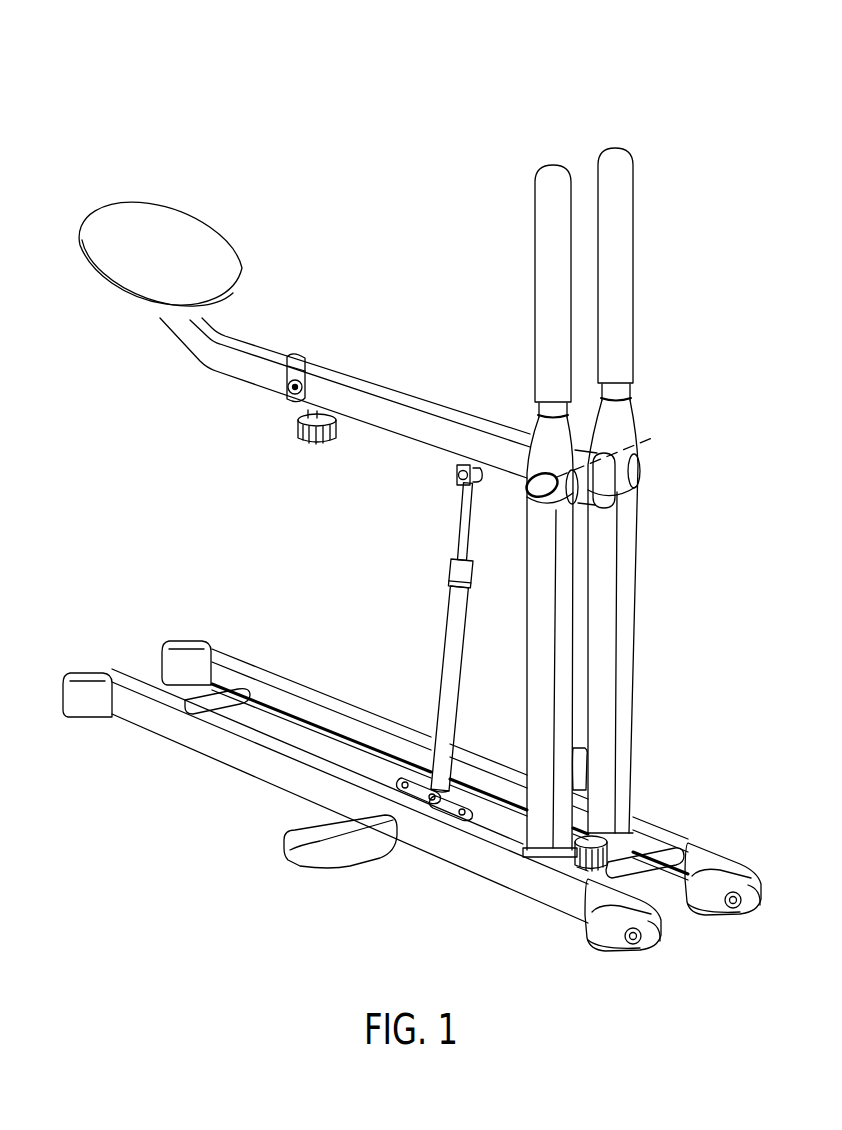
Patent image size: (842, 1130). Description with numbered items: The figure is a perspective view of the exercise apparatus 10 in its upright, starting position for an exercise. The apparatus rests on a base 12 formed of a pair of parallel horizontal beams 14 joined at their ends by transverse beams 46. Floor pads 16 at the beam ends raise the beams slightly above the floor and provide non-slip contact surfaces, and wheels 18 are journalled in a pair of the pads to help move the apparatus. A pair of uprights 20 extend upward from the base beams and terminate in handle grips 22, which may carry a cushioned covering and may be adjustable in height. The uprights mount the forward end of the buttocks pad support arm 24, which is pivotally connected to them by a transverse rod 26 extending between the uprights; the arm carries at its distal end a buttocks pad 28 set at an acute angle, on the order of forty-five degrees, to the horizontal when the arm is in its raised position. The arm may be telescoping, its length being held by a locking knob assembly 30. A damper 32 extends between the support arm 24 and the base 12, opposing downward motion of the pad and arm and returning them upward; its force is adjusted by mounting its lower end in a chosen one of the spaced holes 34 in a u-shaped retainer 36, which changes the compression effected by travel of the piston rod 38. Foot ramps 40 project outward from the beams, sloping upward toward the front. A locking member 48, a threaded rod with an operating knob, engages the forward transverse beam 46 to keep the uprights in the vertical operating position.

The exercise apparatus 10 is at (258, 53).
The base 12 is at (104, 642).
The horizontal beams 14 is at (305, 688).
The floor pads 16 is at (83, 715).
The wheels 18 is at (652, 940).
The uprights 20 is at (630, 602).
The handle grips 22 is at (548, 266).
The buttocks pad support arm 24 is at (332, 372).
The transverse rod 26 is at (600, 466).
The buttocks pad 28 is at (228, 247).
The locking knob assembly 30 is at (318, 445).
The damper 32 is at (447, 645).
The spaced holes 34 is at (466, 815).
The u-shaped retainer 36 is at (440, 802).
The piston rod 38 is at (462, 520).
The foot ramps 40 is at (318, 862).
The transverse beams 46 is at (230, 693).
The locking member 48 is at (600, 838).